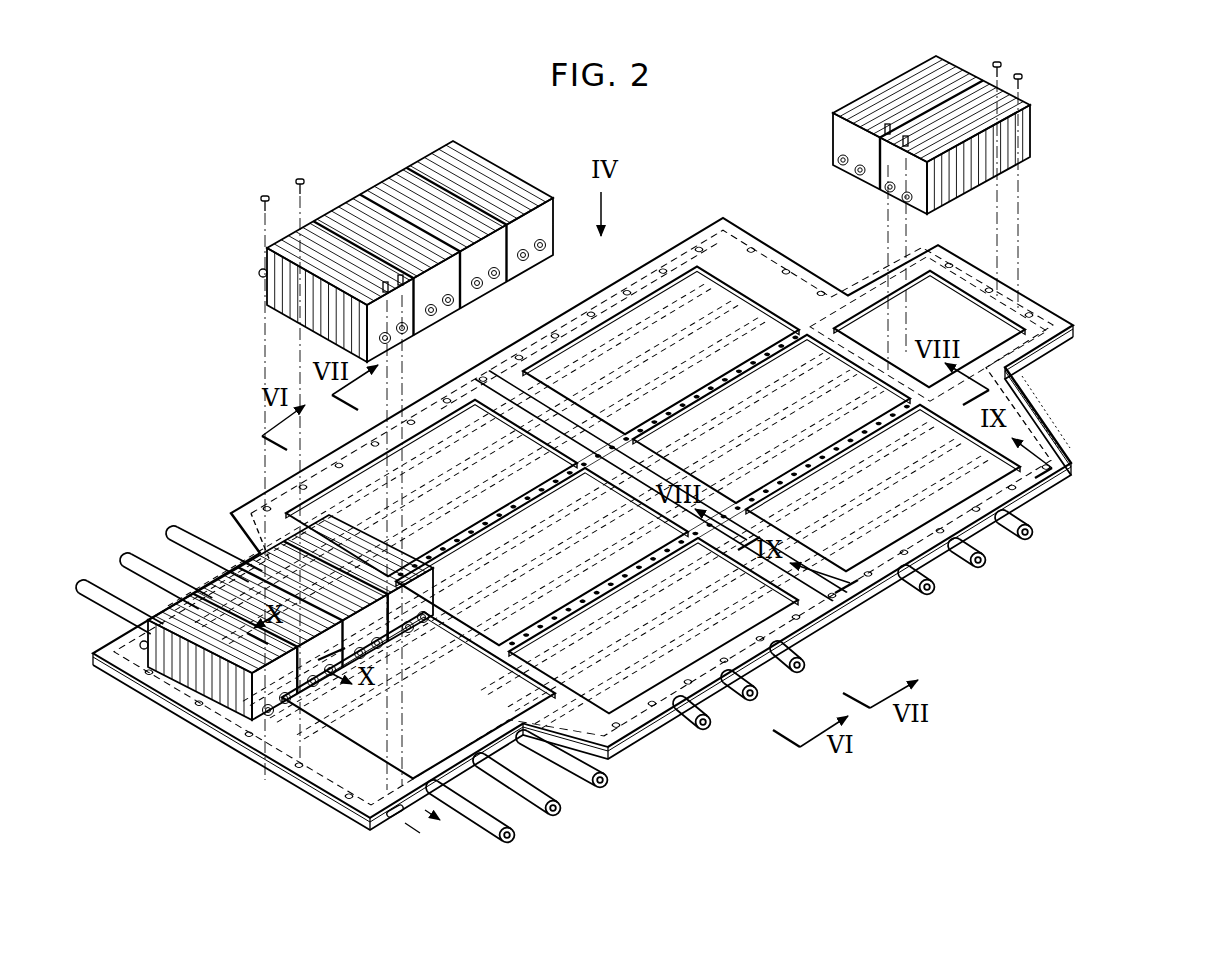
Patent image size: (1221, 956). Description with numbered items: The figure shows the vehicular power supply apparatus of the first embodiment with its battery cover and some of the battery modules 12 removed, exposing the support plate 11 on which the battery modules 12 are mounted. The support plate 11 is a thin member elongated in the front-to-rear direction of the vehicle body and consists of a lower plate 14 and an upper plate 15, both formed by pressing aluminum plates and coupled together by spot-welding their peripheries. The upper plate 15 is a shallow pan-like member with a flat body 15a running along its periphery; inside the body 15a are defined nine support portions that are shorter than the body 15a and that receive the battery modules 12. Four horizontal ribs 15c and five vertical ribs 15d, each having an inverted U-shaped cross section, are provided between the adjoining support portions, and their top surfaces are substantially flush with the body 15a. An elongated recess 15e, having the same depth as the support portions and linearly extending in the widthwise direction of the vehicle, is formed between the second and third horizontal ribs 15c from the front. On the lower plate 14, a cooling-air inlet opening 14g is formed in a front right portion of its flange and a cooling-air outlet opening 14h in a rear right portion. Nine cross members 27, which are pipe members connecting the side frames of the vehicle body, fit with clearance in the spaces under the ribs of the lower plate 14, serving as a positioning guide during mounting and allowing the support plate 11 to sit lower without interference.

The support plate 11 is at (688, 816).
The battery module 12 is at (480, 177).
The lower plate 14 is at (628, 750).
The cooling-air inlet opening 14g is at (1040, 397).
The cooling-air outlet opening 14h is at (396, 822).
The upper plate 15 is at (672, 720).
The body 15a is at (740, 268).
The horizontal rib 15c is at (876, 367).
The vertical rib 15d is at (737, 358).
The elongated recess 15e is at (585, 410).
The cross member 27 is at (925, 595).